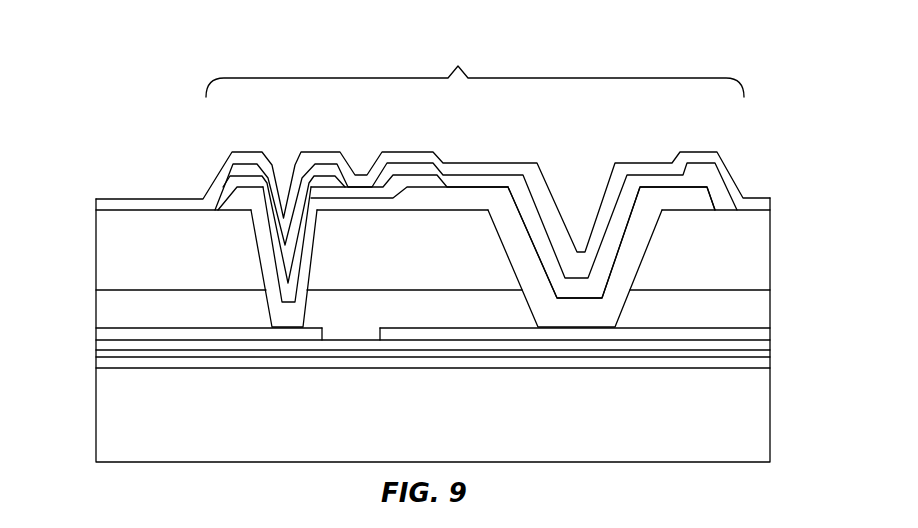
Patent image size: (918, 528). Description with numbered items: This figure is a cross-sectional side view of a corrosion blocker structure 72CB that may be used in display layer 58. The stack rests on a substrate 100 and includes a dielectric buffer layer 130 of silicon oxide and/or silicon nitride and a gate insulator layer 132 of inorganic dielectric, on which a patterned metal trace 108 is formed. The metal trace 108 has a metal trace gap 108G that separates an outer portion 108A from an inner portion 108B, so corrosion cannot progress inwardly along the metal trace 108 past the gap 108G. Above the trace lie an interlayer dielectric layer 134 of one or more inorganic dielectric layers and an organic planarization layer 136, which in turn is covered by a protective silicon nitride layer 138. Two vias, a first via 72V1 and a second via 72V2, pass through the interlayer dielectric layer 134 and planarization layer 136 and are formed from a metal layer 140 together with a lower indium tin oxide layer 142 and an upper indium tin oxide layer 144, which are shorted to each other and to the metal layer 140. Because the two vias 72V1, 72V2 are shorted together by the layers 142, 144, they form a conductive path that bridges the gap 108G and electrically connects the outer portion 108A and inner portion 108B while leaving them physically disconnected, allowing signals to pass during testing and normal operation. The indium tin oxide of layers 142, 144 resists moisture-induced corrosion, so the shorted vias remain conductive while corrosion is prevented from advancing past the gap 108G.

The layer 58 is at (117, 62).
The corrosion blocker structure 72CB is at (475, 70).
The first via 72V1 is at (290, 146).
The second via 72V2 is at (586, 146).
The silicon nitride layer 138 is at (150, 196).
The upper indium tin oxide layer 144 is at (267, 150).
The lower indium tin oxide layer 142 is at (298, 237).
The metal layer 140 is at (307, 260).
The planarization layer 136 is at (103, 250).
The interlayer dielectric layer 134 is at (103, 312).
The metal trace 108 is at (80, 330).
The outer portion 108A is at (103, 339).
The inner portion 108B is at (772, 332).
The metal trace gap 108G is at (350, 327).
The gate insulator layer 132 is at (100, 352).
The dielectric buffer layer 130 is at (100, 362).
The substrate 100 is at (103, 443).